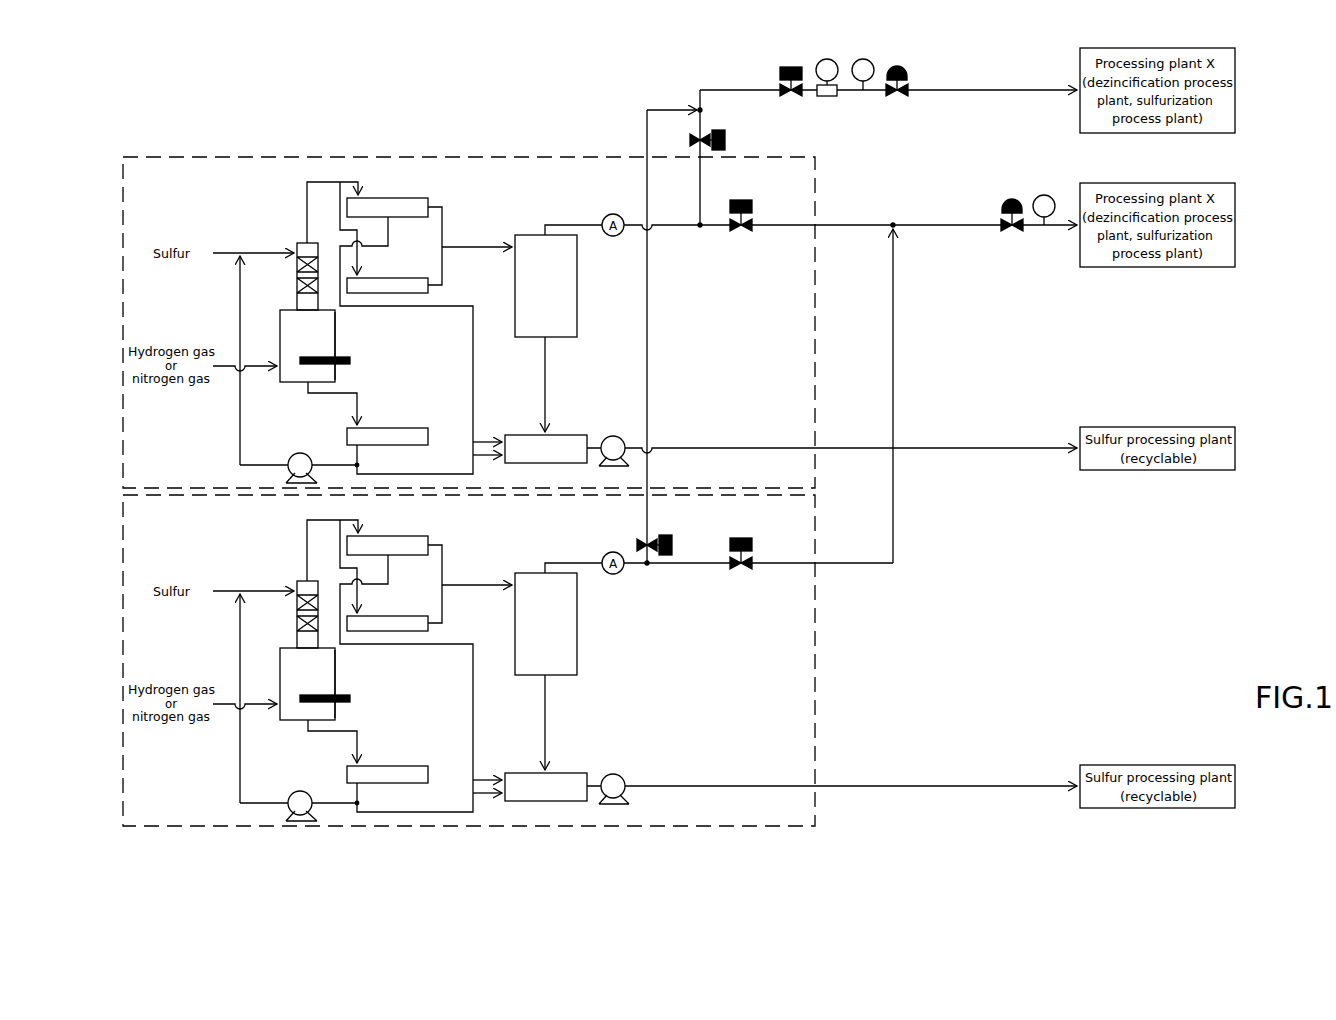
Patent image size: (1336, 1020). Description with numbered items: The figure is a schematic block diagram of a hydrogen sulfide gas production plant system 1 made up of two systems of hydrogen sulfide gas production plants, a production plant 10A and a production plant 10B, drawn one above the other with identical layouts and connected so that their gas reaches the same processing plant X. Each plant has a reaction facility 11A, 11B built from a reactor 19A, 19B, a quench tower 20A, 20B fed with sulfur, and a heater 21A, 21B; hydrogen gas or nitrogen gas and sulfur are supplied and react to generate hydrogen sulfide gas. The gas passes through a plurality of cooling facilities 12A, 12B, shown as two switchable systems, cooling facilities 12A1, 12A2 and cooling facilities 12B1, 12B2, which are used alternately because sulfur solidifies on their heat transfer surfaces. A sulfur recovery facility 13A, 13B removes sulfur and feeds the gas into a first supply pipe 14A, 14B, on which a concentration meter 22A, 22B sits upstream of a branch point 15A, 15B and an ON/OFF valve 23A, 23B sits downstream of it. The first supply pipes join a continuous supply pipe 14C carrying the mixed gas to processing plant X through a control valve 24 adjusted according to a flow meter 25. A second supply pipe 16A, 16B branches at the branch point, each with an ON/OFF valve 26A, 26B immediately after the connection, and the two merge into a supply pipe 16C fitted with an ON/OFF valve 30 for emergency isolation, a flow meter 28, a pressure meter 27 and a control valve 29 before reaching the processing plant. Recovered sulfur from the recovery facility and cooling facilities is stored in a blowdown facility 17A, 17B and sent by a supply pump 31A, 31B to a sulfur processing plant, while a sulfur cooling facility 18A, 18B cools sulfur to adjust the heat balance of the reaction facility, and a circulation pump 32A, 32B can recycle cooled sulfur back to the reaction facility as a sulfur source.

The hydrogen sulfide gas production plant system 1 is at (347, 61).
The hydrogen sulfide gas production plant 10A is at (469, 156).
The hydrogen sulfide gas production plant 10B is at (493, 660).
The reaction facility 11A is at (338, 325).
The reaction facility 11B is at (340, 684).
The cooling facility 12A is at (370, 194).
The cooling facility 12B is at (409, 654).
The cooling facility 12A1 is at (412, 217).
The cooling facility 12A2 is at (412, 278).
The cooling facility 12B1 is at (390, 561).
The cooling facility 12B2 is at (389, 609).
The sulfur recovery facility 13A is at (557, 338).
The sulfur recovery facility 13B is at (546, 643).
The first supply pipe 14A is at (780, 228).
The first supply pipe 14B is at (758, 582).
The supply pipe 14C is at (952, 228).
The branch point 15A is at (702, 232).
The branch point 15B is at (655, 586).
The second supply pipe 16A is at (698, 176).
The second supply pipe 16B is at (622, 528).
The supply pipe 16C is at (720, 88).
The blowdown facility 17A is at (569, 435).
The blowdown facility 17B is at (530, 738).
The sulfur cooling facility 18A is at (408, 428).
The sulfur cooling facility 18B is at (368, 751).
The reactor 19A is at (337, 343).
The reactor 19B is at (359, 684).
The quench tower 20A is at (297, 276).
The quench tower 20B is at (282, 614).
The heater 21A is at (350, 361).
The heater 21B is at (347, 701).
The concentration meter 22A is at (613, 237).
The concentration meter 22B is at (589, 581).
The ON/OFF valve 23A is at (740, 200).
The ON/OFF valve 23B is at (743, 536).
The control valve 24 is at (1008, 202).
The flow meter 25 is at (1044, 195).
The ON/OFF valve 26A is at (718, 130).
The ON/OFF valve 26B is at (660, 527).
The pressure meter 27 is at (863, 59).
The flow meter 28 is at (827, 59).
The control valve 29 is at (897, 67).
The ON/OFF valve 30 is at (791, 67).
The supply pump 31A is at (613, 436).
The supply pump 31B is at (832, 773).
The circulation pump 32A is at (300, 453).
The circulation pump 32B is at (299, 789).